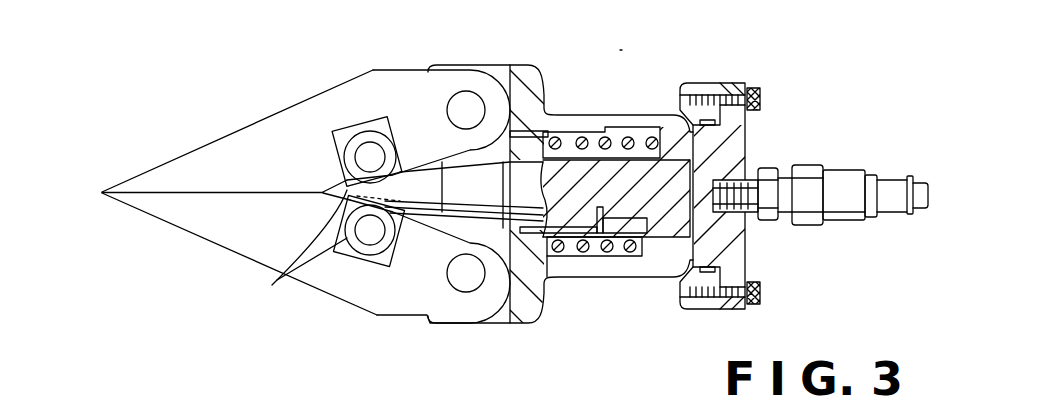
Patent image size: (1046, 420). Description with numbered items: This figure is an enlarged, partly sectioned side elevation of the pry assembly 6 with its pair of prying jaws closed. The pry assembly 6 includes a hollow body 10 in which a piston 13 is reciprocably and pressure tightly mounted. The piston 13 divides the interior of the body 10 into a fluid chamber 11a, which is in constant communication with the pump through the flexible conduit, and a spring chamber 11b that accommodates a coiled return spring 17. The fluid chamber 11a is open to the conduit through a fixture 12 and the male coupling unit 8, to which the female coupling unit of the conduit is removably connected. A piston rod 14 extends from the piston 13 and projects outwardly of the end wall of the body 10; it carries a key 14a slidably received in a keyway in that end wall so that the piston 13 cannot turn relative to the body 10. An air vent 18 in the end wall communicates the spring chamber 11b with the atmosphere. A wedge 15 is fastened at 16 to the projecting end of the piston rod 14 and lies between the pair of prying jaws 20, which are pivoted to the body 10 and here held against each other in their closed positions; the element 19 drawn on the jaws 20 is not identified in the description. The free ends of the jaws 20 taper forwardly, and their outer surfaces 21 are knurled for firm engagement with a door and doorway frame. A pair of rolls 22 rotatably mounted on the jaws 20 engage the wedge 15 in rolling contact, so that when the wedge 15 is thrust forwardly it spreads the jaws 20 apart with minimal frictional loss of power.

The pry assembly 6 is at (620, 52).
The male coupling unit 8 is at (845, 178).
The hollow body 10 is at (588, 122).
The fluid chamber 11a is at (550, 295).
The spring chamber 11b is at (648, 278).
The fixture 12 is at (757, 210).
The piston 13 is at (685, 150).
The piston rod 14 is at (590, 180).
The key 14a is at (608, 233).
The wedge 15 is at (403, 187).
The fastening of wedge to piston rod 16 is at (447, 218).
The coiled return spring 17 is at (640, 147).
The air vent 18 is at (527, 128).
The pivot pin hole 19 is at (470, 103).
The prying jaws 20 is at (343, 98).
The outer surfaces of the prying jaws 21 is at (193, 147).
The rolls 22 is at (272, 285).